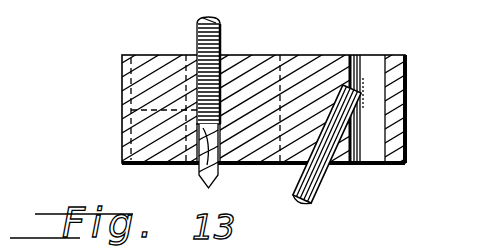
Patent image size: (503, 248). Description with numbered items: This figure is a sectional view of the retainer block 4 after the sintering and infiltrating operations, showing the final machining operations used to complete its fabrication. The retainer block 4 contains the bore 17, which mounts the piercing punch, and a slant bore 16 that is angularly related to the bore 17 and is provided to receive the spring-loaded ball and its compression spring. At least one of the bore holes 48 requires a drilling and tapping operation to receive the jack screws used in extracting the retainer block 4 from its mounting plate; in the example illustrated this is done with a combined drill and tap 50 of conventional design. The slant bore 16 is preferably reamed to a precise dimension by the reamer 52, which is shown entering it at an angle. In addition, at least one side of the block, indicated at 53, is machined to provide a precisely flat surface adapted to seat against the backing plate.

The retainer block 4 is at (117, 92).
The slant bore 16 is at (312, 132).
The bore 17 is at (406, 78).
The bore hole 48 is at (227, 97).
The combined drill and tap 50 is at (190, 28).
The reamer 52 is at (310, 184).
The machined side surface 53 is at (338, 164).